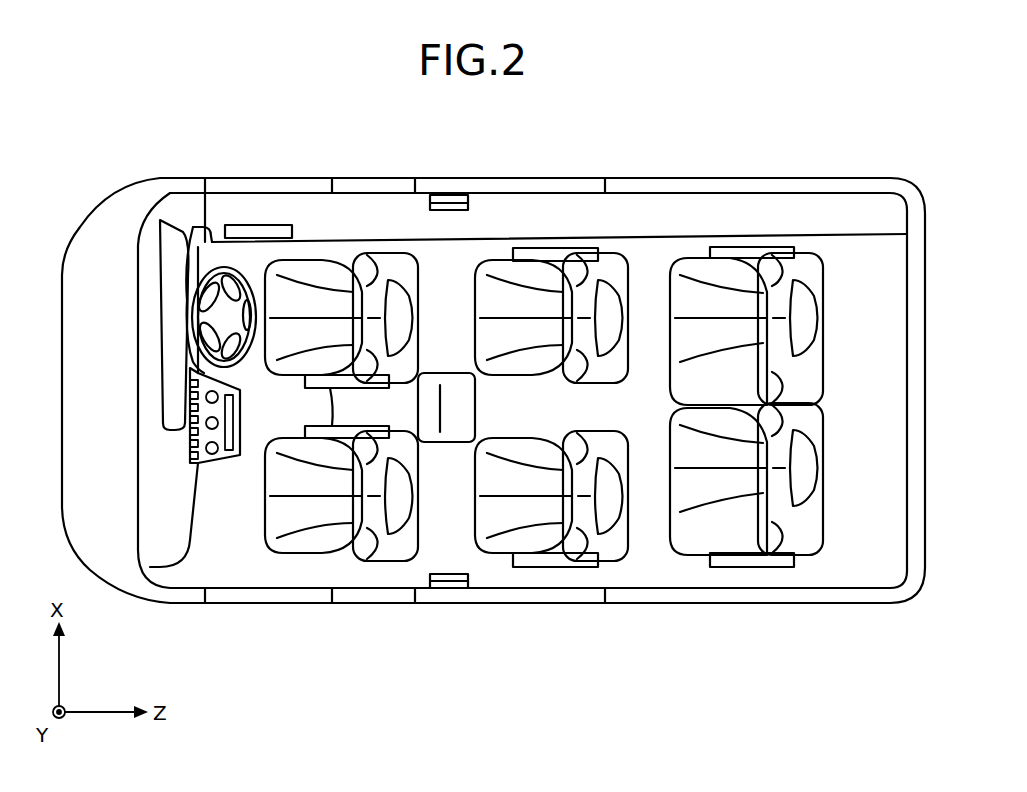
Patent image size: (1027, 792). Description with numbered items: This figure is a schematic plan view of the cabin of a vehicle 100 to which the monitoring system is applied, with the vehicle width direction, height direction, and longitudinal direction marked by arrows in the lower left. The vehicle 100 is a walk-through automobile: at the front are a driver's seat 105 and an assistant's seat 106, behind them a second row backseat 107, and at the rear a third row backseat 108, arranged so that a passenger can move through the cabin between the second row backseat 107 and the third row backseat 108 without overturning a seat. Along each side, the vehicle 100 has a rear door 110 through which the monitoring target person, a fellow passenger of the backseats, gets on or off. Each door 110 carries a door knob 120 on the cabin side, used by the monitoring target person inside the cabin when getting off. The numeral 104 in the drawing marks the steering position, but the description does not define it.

The vehicle 100 is at (620, 158).
The steering wheel 104 is at (168, 306).
The driver's seat 105 is at (309, 303).
The assistant's seat 106 is at (311, 480).
The second row backseat 107 is at (506, 303).
The third row backseat 108 is at (726, 303).
The rear door 110 is at (567, 178).
The door knob 120 is at (448, 178).